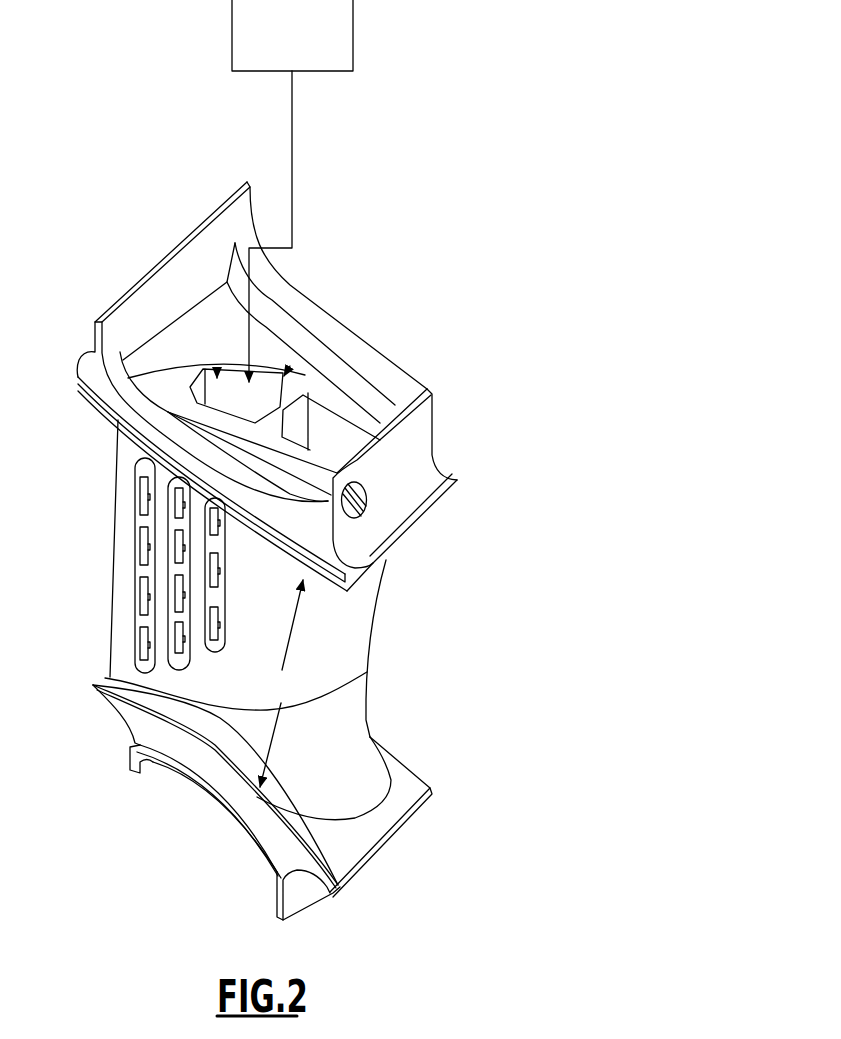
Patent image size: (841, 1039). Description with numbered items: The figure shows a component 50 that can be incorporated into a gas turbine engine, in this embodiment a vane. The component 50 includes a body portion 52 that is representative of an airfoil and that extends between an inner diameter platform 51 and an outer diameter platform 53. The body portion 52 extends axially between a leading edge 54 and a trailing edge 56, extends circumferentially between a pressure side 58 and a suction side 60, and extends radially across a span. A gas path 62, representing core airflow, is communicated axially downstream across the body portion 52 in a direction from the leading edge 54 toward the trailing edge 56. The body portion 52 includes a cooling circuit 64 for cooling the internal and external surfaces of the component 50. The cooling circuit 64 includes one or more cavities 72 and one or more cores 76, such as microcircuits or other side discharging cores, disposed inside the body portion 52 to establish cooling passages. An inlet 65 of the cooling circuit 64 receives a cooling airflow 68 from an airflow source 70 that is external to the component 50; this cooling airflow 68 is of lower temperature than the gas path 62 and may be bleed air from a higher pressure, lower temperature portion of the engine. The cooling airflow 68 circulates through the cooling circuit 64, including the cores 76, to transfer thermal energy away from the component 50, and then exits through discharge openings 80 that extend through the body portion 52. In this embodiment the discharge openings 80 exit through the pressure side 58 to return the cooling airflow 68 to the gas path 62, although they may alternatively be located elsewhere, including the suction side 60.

The component 50 is at (448, 210).
The inner diameter platform 51 is at (400, 850).
The body portion 52 is at (394, 626).
The outer diameter platform 53 is at (462, 436).
The leading edge 54 is at (366, 668).
The trailing edge 56 is at (128, 585).
The pressure side 58 is at (278, 660).
The suction side 60 is at (392, 566).
The gas path 62 is at (394, 702).
The cooling circuit 64 is at (352, 390).
The inlet 65 is at (217, 365).
The cooling airflow 68 is at (252, 292).
The airflow source 70 is at (232, 48).
The cavities 72 is at (285, 372).
The cores 76 is at (130, 522).
The discharge openings 80 is at (140, 478).